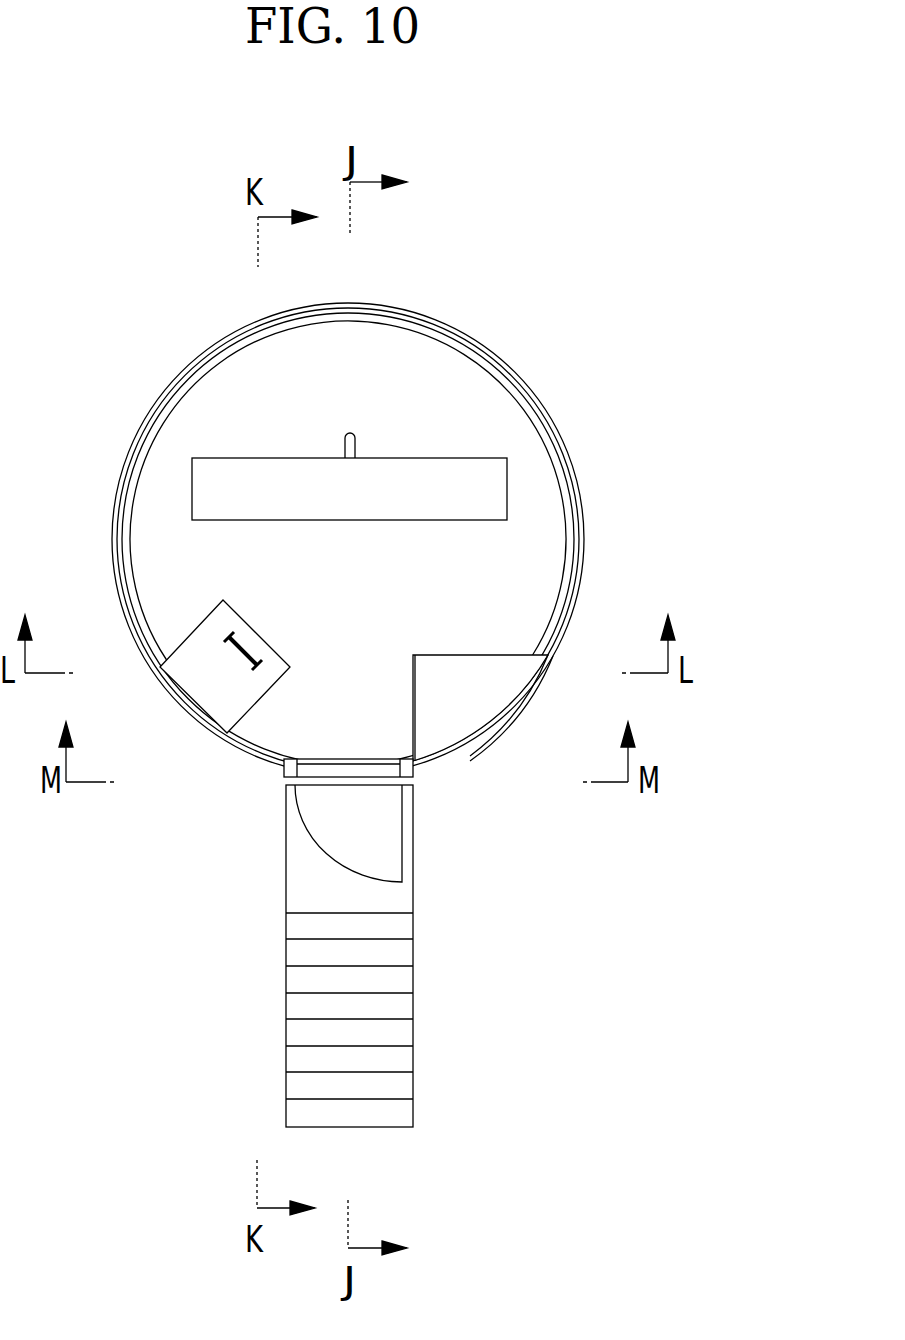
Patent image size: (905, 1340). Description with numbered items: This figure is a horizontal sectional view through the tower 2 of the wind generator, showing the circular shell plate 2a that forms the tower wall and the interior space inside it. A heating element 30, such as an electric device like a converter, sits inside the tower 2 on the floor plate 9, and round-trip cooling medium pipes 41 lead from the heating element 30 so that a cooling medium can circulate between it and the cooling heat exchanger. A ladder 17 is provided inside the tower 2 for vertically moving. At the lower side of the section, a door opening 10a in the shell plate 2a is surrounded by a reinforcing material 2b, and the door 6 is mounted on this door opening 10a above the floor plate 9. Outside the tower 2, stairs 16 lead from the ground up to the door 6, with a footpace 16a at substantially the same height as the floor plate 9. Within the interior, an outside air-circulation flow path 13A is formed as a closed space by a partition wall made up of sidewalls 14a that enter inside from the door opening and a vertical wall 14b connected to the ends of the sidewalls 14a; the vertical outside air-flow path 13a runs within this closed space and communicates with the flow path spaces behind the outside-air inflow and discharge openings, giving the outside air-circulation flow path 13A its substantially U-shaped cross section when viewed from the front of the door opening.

The tower 2 is at (533, 388).
The shell plate 2a is at (462, 328).
The reinforcing material 2b is at (288, 770).
The door 6 is at (413, 828).
The floor plate 9 is at (537, 505).
The door opening 10a is at (365, 770).
The vertical outside air-flow path 13a is at (497, 682).
The outside air-circulation flow path 13A is at (477, 723).
The sidewalls 14a is at (413, 693).
The vertical wall 14b is at (487, 655).
The stairs 16 is at (413, 1007).
The footpace 16a is at (395, 902).
The ladder 17 is at (243, 643).
The heating element 30 is at (308, 473).
The round-trip cooling medium pipes 41 is at (350, 432).